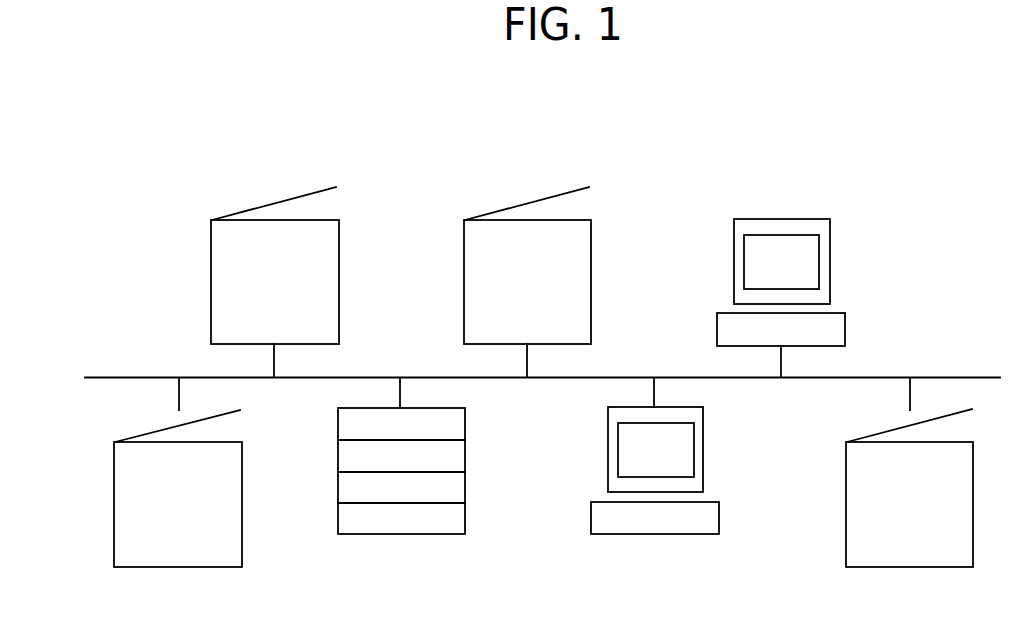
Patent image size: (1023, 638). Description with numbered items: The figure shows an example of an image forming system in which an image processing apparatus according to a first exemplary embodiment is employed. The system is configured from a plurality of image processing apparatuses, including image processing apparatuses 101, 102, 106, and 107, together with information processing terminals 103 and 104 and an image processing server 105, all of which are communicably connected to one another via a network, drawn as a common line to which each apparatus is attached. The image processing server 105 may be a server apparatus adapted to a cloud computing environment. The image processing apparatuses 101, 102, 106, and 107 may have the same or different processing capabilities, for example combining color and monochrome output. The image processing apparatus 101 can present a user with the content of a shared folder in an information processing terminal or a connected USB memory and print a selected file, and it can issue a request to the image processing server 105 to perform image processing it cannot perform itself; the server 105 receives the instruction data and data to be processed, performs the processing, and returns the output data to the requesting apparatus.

The image processing apparatus 101 is at (211, 281).
The image processing apparatus 102 is at (464, 281).
The information processing terminal 103 is at (733, 257).
The information processing terminal 104 is at (591, 513).
The image processing server 105 is at (337, 515).
The image processing apparatus 106 is at (114, 499).
The image processing apparatus 107 is at (846, 501).